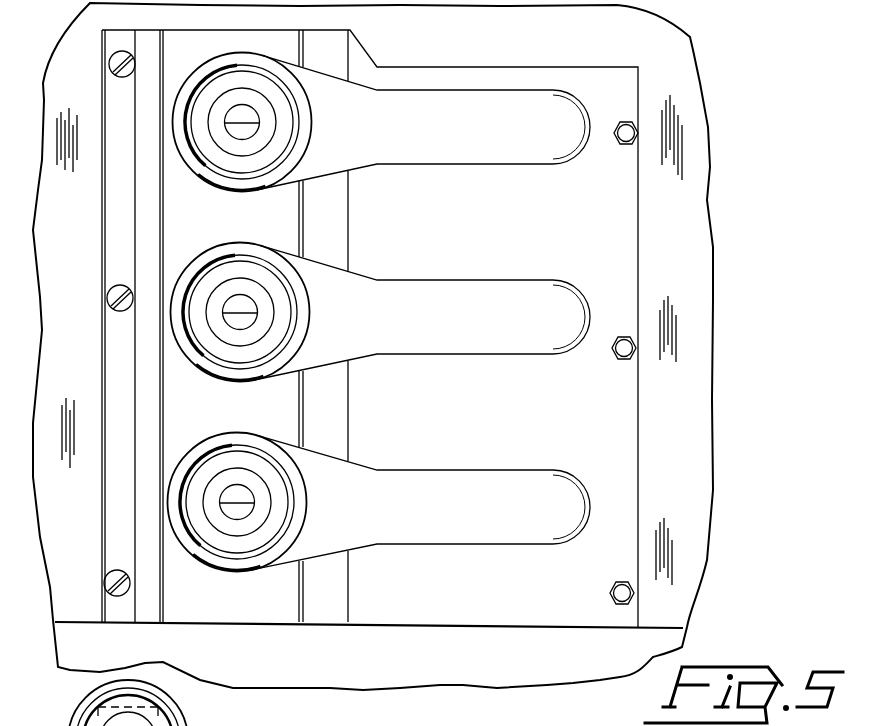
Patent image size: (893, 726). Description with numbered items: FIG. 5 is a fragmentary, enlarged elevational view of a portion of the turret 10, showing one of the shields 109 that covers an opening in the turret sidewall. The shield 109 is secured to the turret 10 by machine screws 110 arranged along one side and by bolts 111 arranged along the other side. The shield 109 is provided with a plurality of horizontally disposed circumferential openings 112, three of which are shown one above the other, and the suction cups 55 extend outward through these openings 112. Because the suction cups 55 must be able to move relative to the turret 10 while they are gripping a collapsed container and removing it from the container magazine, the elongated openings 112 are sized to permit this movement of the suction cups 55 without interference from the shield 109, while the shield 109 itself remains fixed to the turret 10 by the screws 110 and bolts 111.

The turret 10 is at (716, 242).
The suction cups 55 is at (292, 125).
The shields 109 is at (438, 612).
The machine screws 110 is at (113, 64).
The bolts 111 is at (624, 146).
The circumferential openings 112 is at (491, 160).